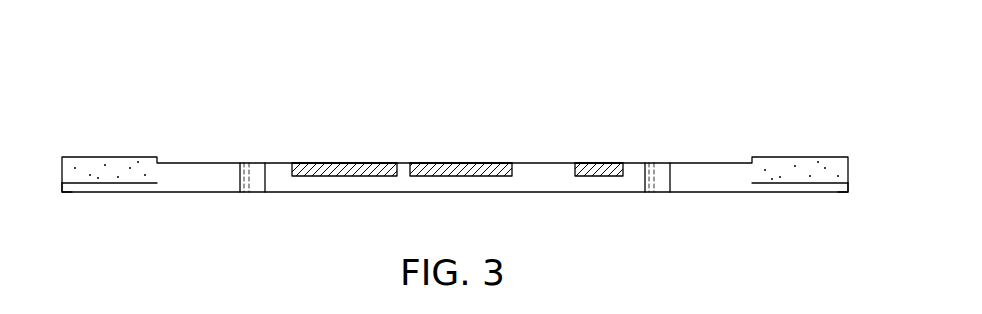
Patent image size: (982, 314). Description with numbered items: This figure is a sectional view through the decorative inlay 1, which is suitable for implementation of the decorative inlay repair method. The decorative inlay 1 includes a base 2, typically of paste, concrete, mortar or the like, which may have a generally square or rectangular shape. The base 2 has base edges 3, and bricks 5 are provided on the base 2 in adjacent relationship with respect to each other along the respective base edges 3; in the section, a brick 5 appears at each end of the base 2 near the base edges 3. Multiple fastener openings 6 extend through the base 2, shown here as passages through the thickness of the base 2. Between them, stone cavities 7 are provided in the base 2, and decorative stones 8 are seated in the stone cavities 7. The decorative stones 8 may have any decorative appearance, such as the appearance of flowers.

The decorative inlay 1 is at (207, 90).
The base 2 is at (315, 192).
The base edges 3 is at (62, 188).
The bricks 5 is at (104, 157).
The fastener openings 6 is at (262, 180).
The stone cavities 7 is at (393, 162).
The decorative stones 8 is at (330, 163).